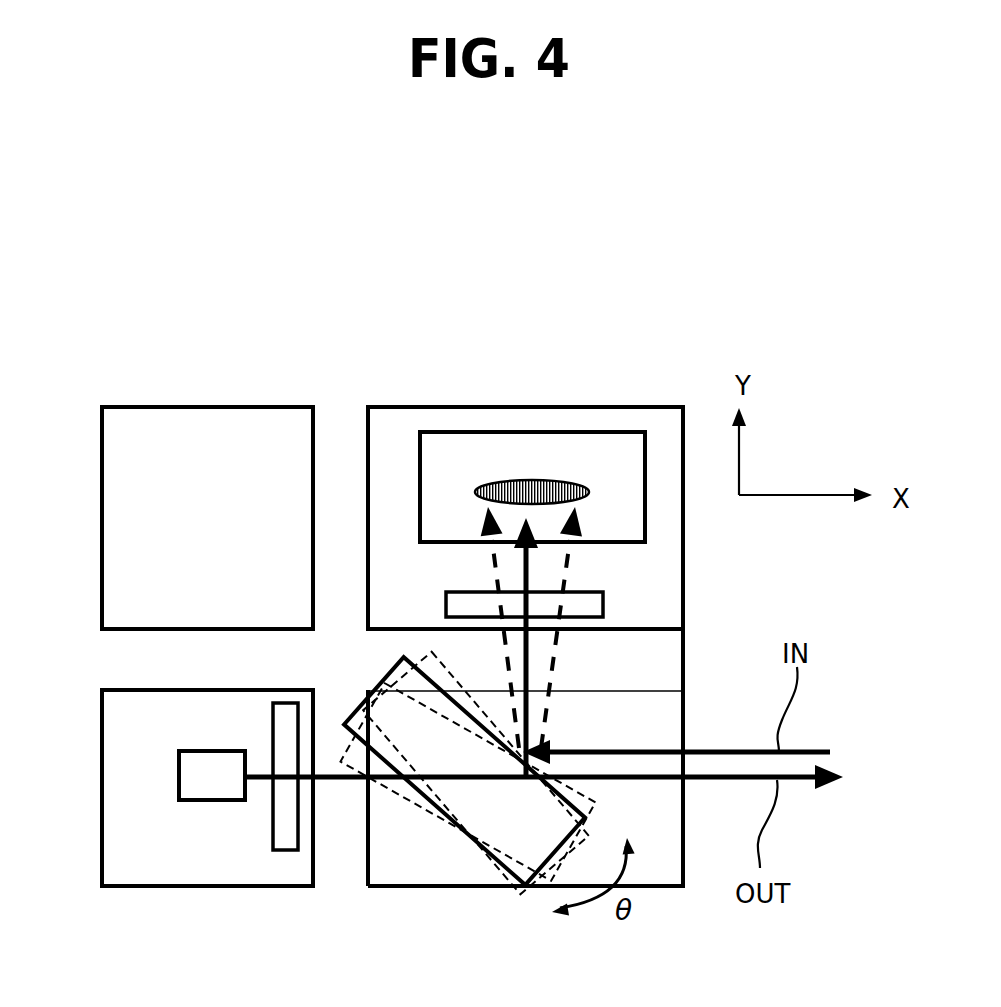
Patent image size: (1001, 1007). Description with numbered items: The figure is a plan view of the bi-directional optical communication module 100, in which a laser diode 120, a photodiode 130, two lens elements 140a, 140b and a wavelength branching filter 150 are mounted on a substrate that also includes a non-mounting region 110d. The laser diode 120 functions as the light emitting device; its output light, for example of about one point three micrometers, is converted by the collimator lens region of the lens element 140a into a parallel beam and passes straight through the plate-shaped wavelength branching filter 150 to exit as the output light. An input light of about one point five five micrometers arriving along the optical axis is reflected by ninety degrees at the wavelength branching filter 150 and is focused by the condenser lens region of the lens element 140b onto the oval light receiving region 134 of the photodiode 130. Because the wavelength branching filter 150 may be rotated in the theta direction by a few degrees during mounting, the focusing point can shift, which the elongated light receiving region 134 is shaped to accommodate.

The optical module 100 is at (597, 258).
The non-mounting region 110d is at (184, 416).
The laser diode 120 is at (179, 776).
The photodiode 130 is at (458, 437).
The light receiving region 134 is at (531, 480).
The lens element 140a is at (283, 850).
The lens element 140b is at (603, 602).
The wavelength branching filter 150 is at (430, 797).